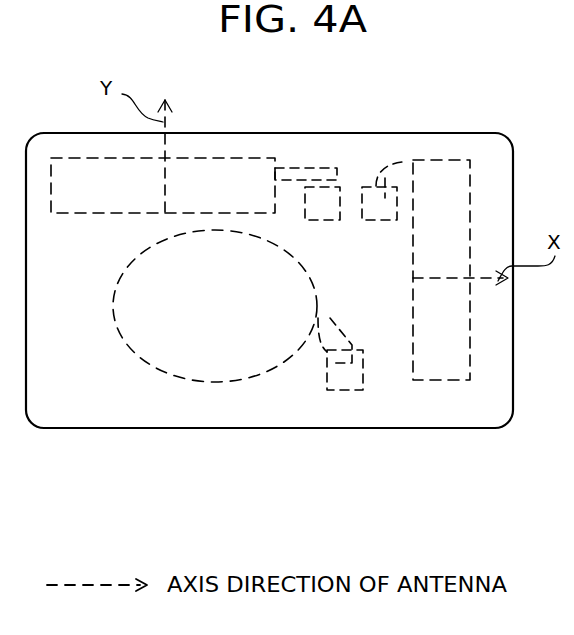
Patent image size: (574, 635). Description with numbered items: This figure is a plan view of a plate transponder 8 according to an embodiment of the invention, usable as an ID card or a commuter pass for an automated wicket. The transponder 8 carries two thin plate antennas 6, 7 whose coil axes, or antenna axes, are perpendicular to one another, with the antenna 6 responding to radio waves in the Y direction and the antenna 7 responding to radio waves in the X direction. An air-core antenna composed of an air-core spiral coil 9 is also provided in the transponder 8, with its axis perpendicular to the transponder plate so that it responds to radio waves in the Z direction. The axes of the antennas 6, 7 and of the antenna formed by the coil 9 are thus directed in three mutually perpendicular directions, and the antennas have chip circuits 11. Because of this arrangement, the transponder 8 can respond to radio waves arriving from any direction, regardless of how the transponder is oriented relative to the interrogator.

The thin plate antenna 6 is at (228, 158).
The thin plate antenna 7 is at (434, 154).
The plate transponder 8 is at (80, 420).
The air-core spiral coil 9 is at (194, 390).
The chip circuits 11 is at (329, 226).